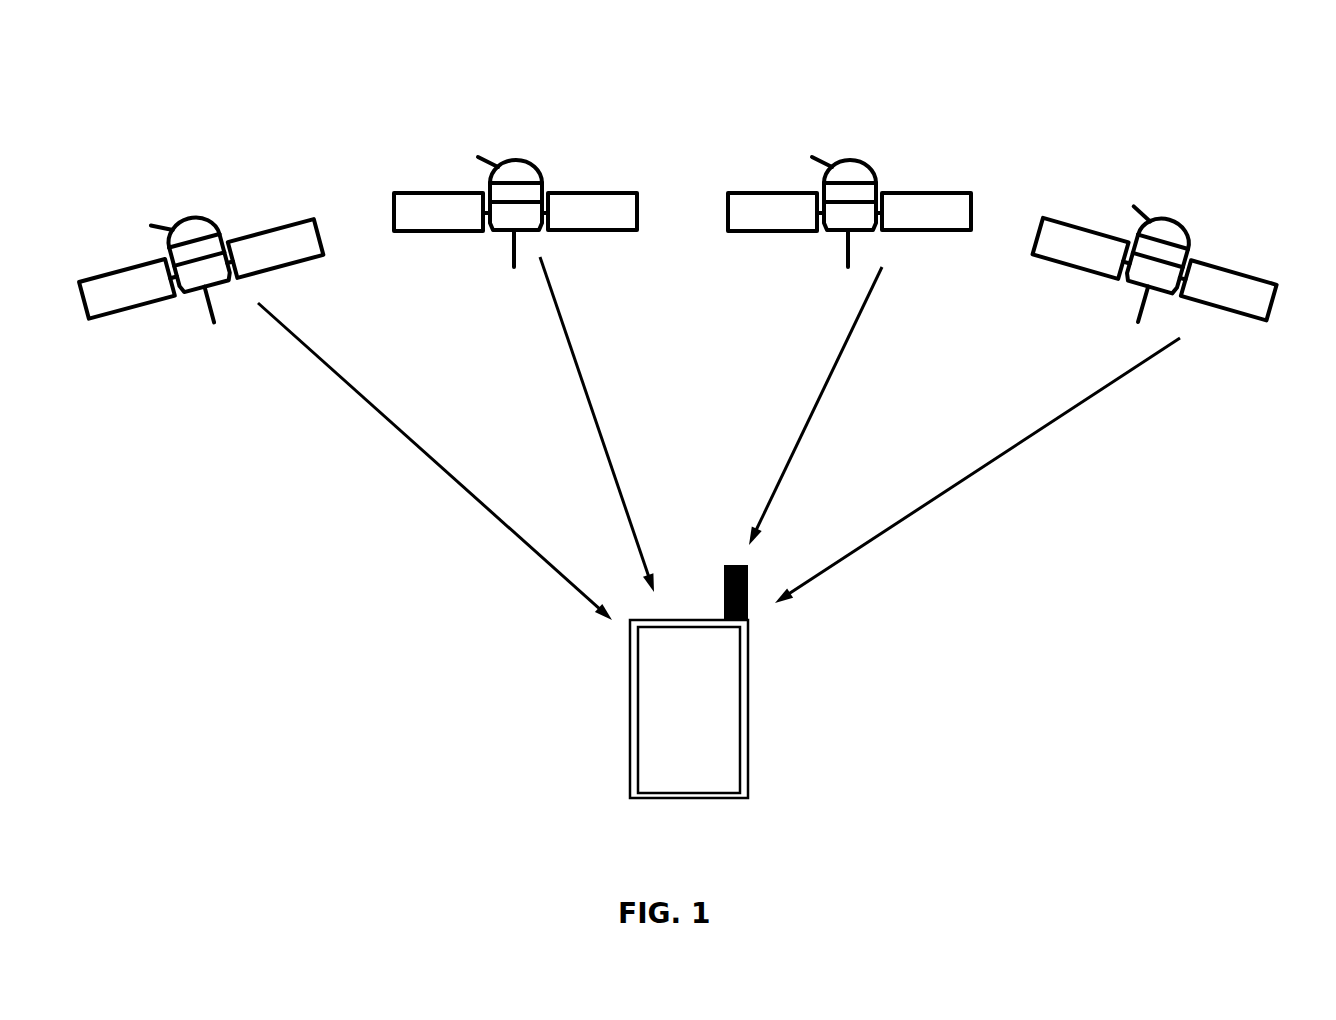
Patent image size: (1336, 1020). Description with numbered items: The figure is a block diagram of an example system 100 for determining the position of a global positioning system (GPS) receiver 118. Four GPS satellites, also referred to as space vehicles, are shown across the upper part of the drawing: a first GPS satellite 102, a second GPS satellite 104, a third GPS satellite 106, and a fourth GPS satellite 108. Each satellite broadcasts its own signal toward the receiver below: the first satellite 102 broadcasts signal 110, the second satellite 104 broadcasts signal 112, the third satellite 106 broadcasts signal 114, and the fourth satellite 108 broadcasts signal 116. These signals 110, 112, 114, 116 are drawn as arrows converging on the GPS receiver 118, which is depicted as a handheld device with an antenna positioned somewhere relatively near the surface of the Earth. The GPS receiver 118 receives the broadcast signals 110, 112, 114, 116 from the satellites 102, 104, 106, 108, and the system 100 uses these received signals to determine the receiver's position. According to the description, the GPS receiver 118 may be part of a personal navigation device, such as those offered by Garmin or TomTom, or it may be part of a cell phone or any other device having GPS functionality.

The system 100 is at (260, 140).
The GPS satellite 102 is at (113, 277).
The GPS satellite 104 is at (447, 212).
The GPS satellite 106 is at (919, 212).
The GPS satellite 108 is at (1238, 295).
The signal 110 is at (388, 412).
The signal 112 is at (595, 392).
The signal 114 is at (823, 377).
The signal 116 is at (1090, 388).
The GPS receiver 118 is at (630, 800).